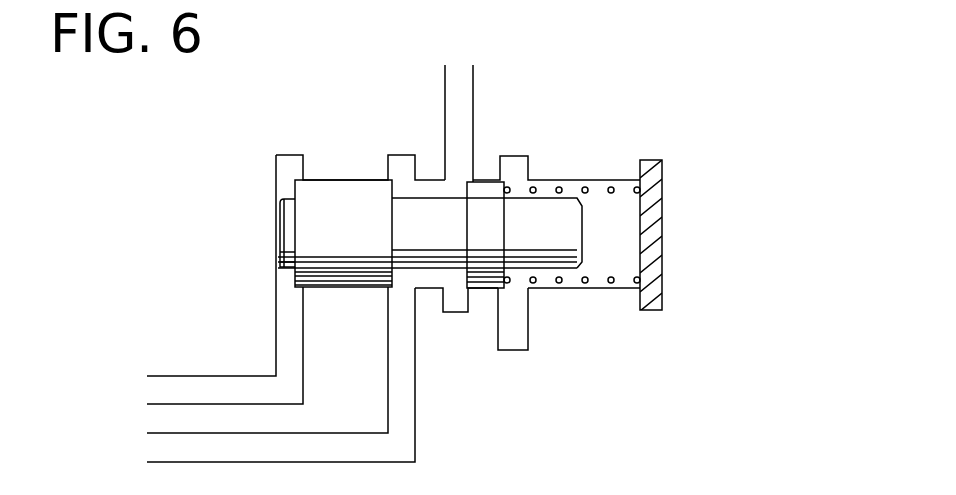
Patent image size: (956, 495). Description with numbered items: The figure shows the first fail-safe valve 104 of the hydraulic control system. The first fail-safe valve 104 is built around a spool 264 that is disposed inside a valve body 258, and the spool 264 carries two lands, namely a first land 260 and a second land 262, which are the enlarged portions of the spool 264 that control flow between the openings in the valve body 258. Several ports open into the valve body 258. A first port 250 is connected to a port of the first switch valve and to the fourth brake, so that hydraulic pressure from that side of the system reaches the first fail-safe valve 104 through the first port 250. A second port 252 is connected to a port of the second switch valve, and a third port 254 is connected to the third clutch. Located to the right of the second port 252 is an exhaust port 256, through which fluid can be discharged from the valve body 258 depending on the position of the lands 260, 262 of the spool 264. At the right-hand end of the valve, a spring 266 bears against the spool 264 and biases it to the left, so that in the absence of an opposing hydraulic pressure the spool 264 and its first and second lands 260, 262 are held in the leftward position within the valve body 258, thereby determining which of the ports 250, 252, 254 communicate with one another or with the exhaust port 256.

The first fail-safe valve 104 is at (700, 210).
The first port 250 is at (288, 302).
The second port 252 is at (398, 302).
The third port 254 is at (457, 167).
The exhaust port 256 is at (515, 302).
The valve body 258 is at (599, 308).
The first land 260 is at (332, 195).
The second land 262 is at (487, 183).
The spool 264 is at (290, 230).
The spring 266 is at (608, 181).